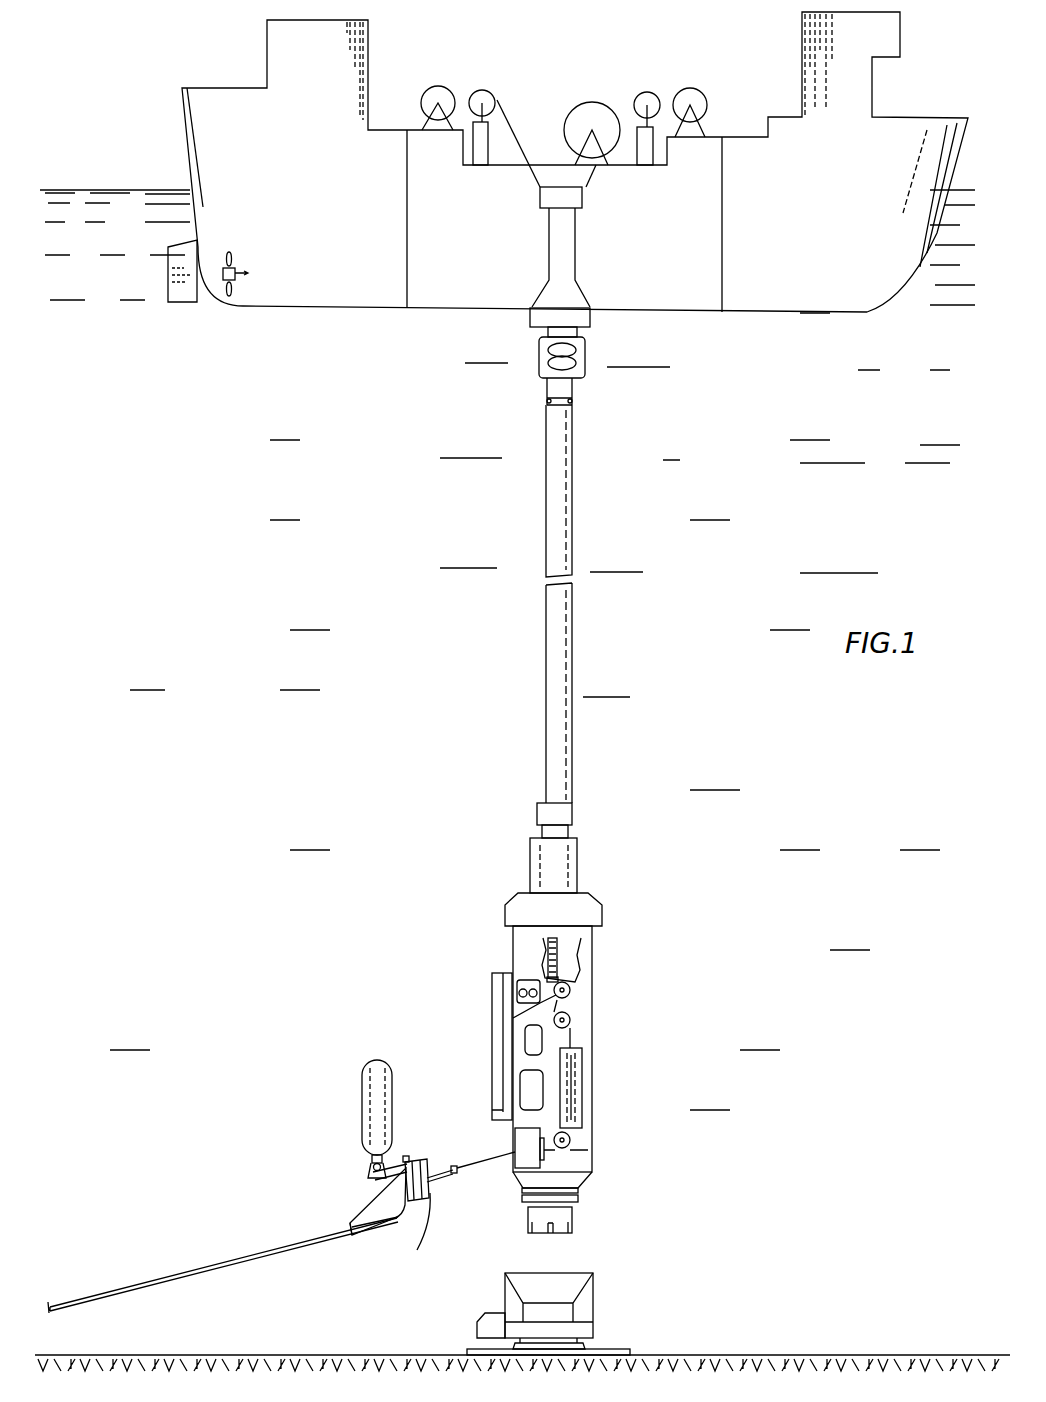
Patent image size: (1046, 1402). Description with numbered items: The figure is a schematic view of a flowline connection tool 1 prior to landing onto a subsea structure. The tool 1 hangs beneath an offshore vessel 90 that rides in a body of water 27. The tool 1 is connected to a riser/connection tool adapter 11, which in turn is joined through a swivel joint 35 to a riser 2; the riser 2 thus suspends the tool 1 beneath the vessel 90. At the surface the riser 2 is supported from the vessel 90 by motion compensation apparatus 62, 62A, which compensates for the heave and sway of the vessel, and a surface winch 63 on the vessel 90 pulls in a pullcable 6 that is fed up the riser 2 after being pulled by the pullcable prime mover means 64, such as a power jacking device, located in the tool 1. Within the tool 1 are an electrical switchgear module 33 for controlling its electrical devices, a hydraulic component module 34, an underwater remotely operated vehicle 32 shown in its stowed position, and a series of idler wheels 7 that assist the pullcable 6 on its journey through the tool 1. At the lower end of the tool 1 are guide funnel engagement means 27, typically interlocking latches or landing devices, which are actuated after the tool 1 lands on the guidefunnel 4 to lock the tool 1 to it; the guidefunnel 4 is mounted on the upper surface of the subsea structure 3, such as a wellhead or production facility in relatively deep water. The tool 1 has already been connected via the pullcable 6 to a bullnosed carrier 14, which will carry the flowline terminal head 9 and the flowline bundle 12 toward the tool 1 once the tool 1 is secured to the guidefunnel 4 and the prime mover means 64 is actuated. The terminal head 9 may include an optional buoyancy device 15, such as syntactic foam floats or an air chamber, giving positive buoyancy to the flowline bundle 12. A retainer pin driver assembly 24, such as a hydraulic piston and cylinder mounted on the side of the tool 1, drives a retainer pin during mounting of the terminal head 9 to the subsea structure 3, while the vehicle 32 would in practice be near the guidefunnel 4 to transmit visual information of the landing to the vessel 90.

The flowline connection tool 1 is at (609, 995).
The riser 2 is at (573, 502).
The subsea structure 3 is at (613, 1337).
The guidefunnel 4 is at (593, 1295).
The pullcable 6 is at (557, 160).
The idler wheels 7 is at (570, 1150).
The flowline terminal head 9 is at (343, 1202).
The riser/connection tool adapter 11 is at (605, 905).
The flowline bundle 12 is at (80, 1295).
The bullnosed carrier 14 is at (425, 1205).
The buoyancy device 15 is at (362, 1087).
The retainer pin driver assembly 24 is at (492, 975).
The body of water 27 is at (93, 190).
The underwater remotely operated vehicle 32 is at (523, 980).
The electrical switchgear module 33 is at (525, 1043).
The hydraulic component module 34 is at (520, 1088).
The swivel joint 35 is at (537, 810).
The motion compensation apparatus 62 is at (462, 88).
The motion compensation apparatus 62A is at (636, 118).
The surface winch 63 is at (593, 102).
The pullcable prime mover means 64 is at (585, 1085).
The offshore vessel 90 is at (853, 295).